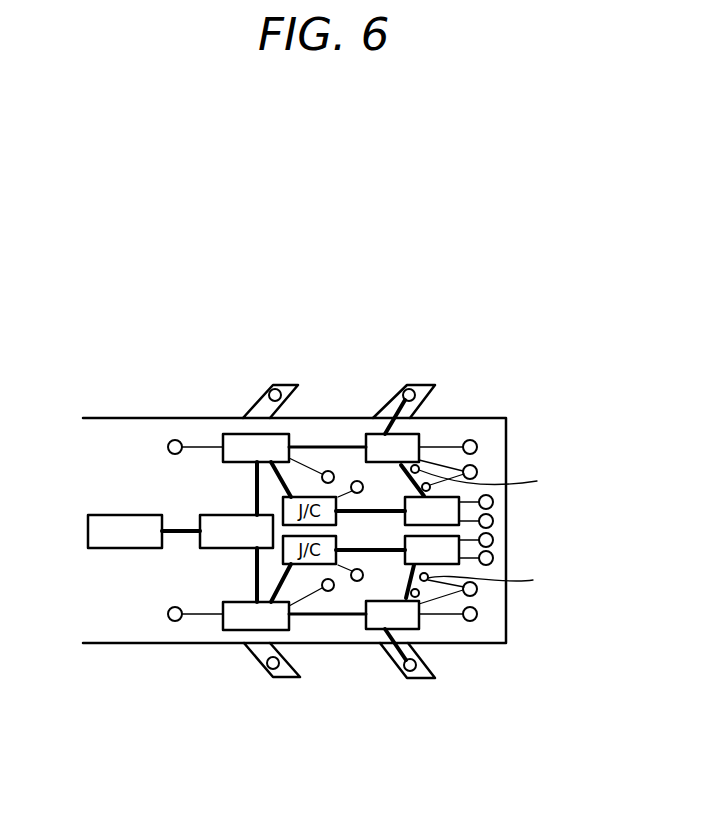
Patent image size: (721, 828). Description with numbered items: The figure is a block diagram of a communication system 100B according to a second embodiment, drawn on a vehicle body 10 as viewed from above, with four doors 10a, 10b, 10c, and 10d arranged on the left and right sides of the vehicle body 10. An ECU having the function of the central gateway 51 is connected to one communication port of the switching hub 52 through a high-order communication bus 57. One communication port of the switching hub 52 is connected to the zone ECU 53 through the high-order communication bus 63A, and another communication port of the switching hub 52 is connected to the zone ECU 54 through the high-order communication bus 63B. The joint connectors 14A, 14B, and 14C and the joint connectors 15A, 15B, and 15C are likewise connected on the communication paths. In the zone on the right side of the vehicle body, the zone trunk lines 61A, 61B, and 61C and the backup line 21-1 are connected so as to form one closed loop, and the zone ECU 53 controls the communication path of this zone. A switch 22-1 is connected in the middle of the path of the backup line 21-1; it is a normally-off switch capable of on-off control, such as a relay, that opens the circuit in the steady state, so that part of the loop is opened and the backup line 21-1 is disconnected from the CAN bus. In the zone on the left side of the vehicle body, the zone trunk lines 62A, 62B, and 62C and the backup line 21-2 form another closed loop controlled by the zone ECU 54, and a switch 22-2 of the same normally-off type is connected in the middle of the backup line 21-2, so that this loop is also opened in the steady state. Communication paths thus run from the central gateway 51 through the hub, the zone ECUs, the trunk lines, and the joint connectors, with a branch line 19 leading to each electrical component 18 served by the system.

The vehicle body 10 is at (134, 418).
The door 10a is at (285, 385).
The door 10b is at (295, 677).
The door 10c is at (425, 385).
The door 10d is at (420, 678).
The joint connector 14A is at (415, 430).
The joint connector 14B is at (240, 515).
The joint connector 14C is at (456, 498).
The joint connector 15A is at (415, 643).
The joint connector 15B is at (282, 586).
The joint connector 15C is at (456, 563).
The electrical component 18 is at (174, 440).
The branch line 19 is at (203, 445).
The backup line 21-1 is at (499, 480).
The backup line 21-2 is at (503, 582).
The switch 22-1 is at (478, 470).
The switch 22-2 is at (440, 596).
The central gateway 51 is at (88, 530).
The switching hub 52 is at (200, 540).
The zone ECU 53 is at (233, 434).
The zone ECU 54 is at (235, 630).
The high-order communication bus 57 is at (183, 530).
The zone trunk line 61A is at (332, 446).
The zone trunk line 61B is at (280, 484).
The zone trunk line 61C is at (368, 510).
The zone trunk line 62A is at (350, 617).
The zone trunk line 62B is at (253, 578).
The zone trunk line 62C is at (367, 552).
The high-order communication bus 63A is at (253, 470).
The high-order communication bus 63B is at (253, 594).
The communication system 100B is at (115, 660).